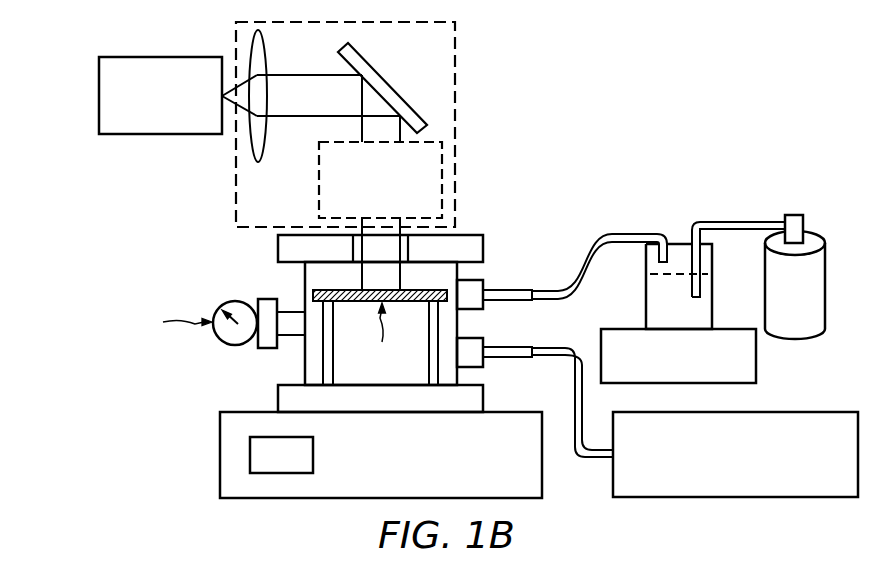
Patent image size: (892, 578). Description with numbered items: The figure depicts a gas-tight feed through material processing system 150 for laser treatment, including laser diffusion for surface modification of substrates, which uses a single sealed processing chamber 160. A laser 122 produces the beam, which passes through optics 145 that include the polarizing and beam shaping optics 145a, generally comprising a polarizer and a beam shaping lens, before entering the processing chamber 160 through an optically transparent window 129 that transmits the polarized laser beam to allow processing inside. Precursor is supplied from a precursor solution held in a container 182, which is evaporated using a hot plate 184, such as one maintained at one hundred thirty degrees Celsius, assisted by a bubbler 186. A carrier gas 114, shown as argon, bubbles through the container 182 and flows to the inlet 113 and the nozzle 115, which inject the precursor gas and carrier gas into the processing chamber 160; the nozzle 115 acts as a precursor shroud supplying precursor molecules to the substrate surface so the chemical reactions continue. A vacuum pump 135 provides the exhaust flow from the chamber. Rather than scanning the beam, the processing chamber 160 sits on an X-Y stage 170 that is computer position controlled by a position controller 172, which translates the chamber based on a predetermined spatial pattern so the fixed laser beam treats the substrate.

The gas-tight feed through material processing system 150 is at (664, 55).
The laser 122 is at (146, 116).
The optics 145 is at (462, 120).
The polarizing and beam shaping optics 145a is at (362, 190).
The processing chamber 160 is at (270, 278).
The optically transparent window 129 is at (414, 246).
The inlet 113 is at (472, 290).
The nozzle 115 is at (453, 302).
The carrier gas 114 is at (799, 331).
The bubbler 186 is at (735, 258).
The container 182 is at (664, 323).
The hot plate 184 is at (664, 376).
The X-Y stage 170 is at (381, 455).
The position controller 172 is at (268, 466).
The vacuum pump 135 is at (723, 478).